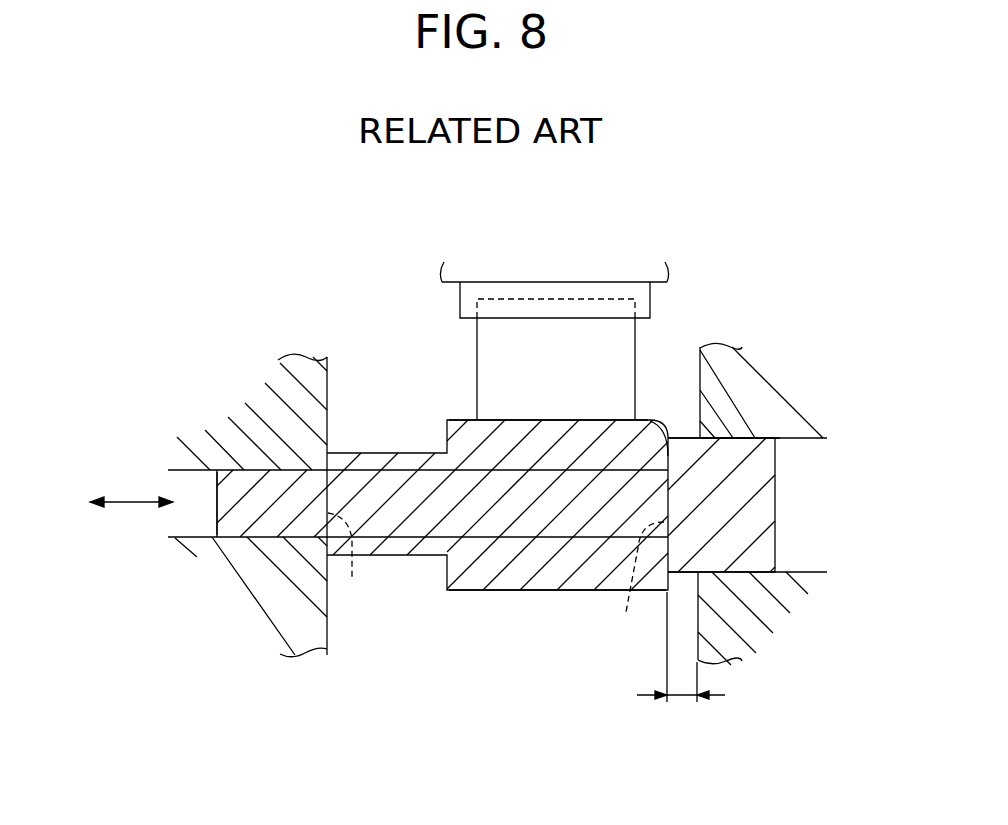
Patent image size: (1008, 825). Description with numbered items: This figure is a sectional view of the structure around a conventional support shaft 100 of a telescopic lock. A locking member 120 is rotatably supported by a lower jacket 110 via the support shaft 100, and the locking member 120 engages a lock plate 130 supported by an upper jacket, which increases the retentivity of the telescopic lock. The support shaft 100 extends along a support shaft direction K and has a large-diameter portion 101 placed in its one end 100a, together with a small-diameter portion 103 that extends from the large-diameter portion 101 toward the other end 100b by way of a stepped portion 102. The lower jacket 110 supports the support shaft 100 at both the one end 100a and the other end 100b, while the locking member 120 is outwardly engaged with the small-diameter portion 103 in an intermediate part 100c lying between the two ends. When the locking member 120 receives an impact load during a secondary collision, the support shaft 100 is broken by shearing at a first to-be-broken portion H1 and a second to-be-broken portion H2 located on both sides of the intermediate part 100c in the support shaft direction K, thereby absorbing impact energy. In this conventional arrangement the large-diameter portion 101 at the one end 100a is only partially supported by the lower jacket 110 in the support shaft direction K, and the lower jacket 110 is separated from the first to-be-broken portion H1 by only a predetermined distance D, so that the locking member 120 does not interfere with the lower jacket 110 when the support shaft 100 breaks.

The support shaft 100 is at (392, 468).
The one end 100a is at (770, 509).
The other end 100b is at (222, 499).
The intermediate part 100c is at (561, 468).
The large-diameter portion 101 is at (742, 437).
The stepped portion 102 is at (655, 438).
The small-diameter portion 103 is at (486, 541).
The lower jacket 110 is at (253, 597).
The locking member 120 is at (547, 582).
The lock plate 130 is at (460, 301).
The first to-be-broken portion H1 is at (633, 583).
The second to-be-broken portion H2 is at (349, 564).
The predetermined distance D is at (678, 700).
The support shaft direction K is at (134, 500).